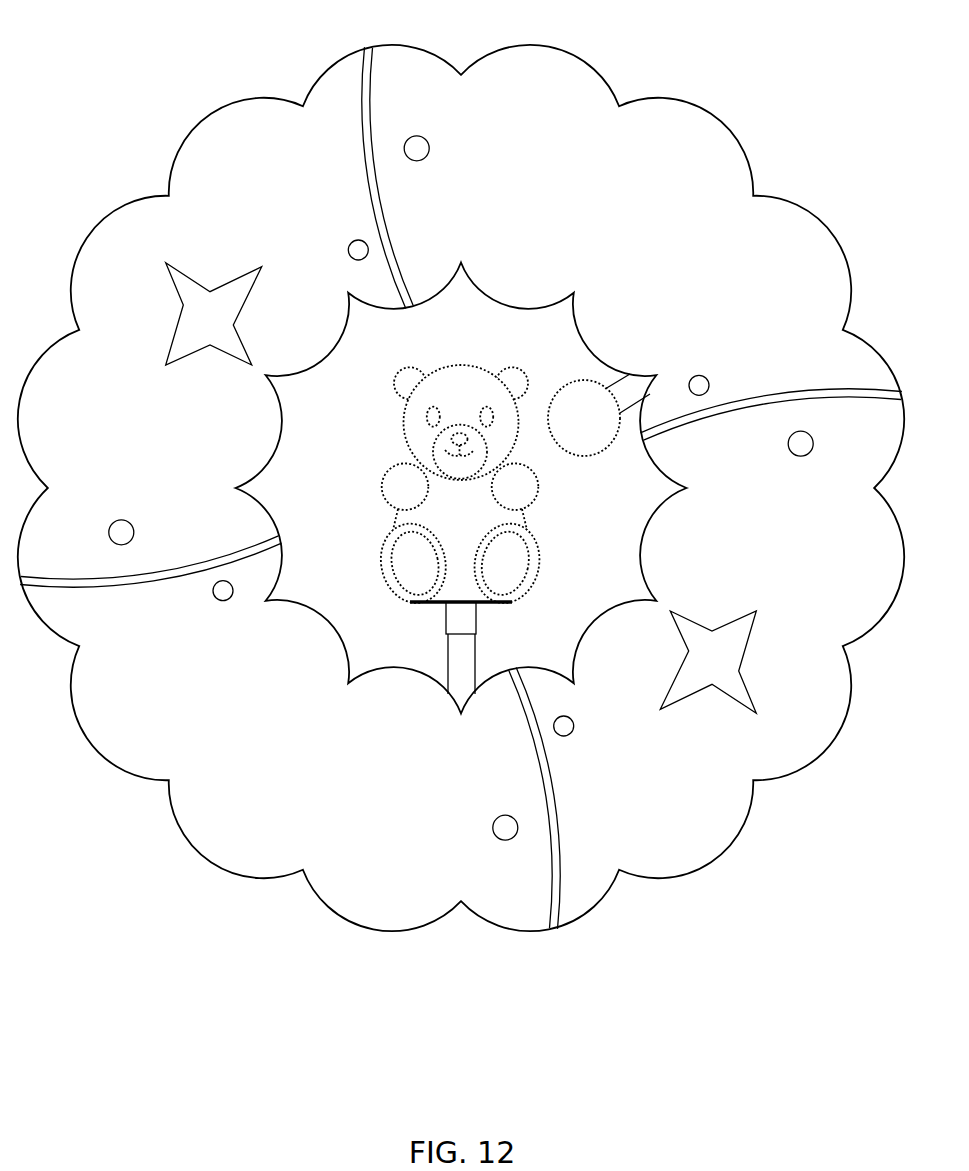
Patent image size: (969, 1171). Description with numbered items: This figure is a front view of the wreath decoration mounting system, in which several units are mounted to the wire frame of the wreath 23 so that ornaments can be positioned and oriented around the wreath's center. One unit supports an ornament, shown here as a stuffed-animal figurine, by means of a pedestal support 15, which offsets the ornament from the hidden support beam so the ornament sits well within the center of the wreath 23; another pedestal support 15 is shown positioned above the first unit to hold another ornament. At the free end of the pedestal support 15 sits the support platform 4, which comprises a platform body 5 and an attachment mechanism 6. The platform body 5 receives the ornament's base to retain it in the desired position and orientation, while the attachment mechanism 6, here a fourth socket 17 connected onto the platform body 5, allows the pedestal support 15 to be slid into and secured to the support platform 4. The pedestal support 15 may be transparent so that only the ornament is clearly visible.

The wreath 23 is at (710, 141).
The pedestal support 15 is at (476, 648).
The support platform 4 is at (380, 609).
The platform body 5 is at (505, 604).
The attachment mechanism 6 is at (412, 630).
The fourth socket 17 is at (446, 623).